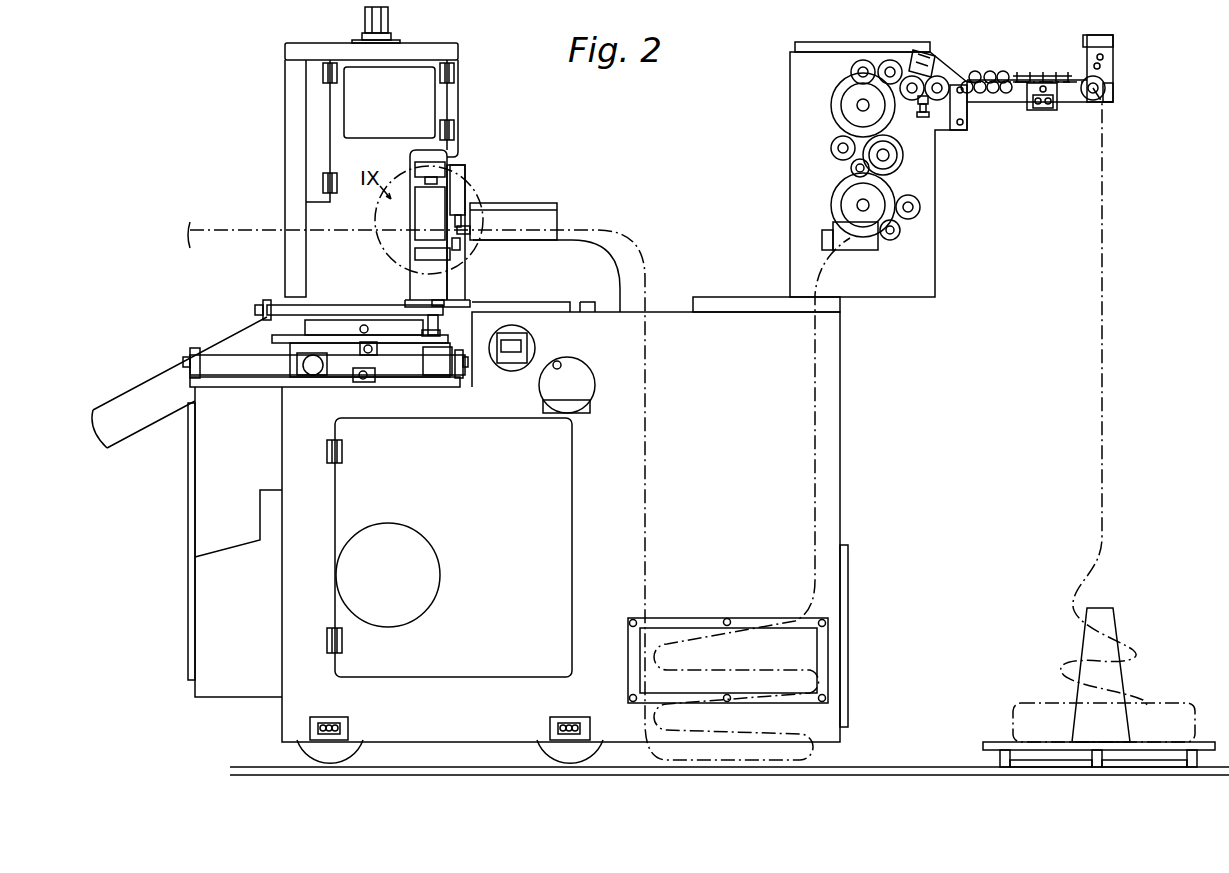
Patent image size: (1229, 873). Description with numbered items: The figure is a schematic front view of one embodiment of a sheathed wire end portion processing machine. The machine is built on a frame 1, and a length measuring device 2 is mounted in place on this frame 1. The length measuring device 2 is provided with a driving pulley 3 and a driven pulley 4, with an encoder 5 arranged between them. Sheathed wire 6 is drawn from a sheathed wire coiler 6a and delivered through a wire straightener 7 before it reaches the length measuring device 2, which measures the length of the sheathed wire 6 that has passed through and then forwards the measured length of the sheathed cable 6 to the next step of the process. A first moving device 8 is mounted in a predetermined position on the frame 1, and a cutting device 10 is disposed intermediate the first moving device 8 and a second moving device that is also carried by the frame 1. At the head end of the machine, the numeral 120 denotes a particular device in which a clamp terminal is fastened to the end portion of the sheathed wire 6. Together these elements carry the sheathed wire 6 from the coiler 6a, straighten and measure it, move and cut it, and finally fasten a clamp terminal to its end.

The frame 1 is at (848, 485).
The length measuring device 2 is at (828, 141).
The driving pulley 3 is at (851, 100).
The driven pulley 4 is at (851, 197).
The encoder 5 is at (898, 162).
The sheathed wire 6 is at (250, 228).
The sheathed wire coiler 6a is at (1172, 703).
The wire straightener 7 is at (1025, 72).
The first moving device 8 is at (560, 206).
The cutting device 10 is at (448, 193).
The clamp terminal fastening device 120 is at (460, 100).